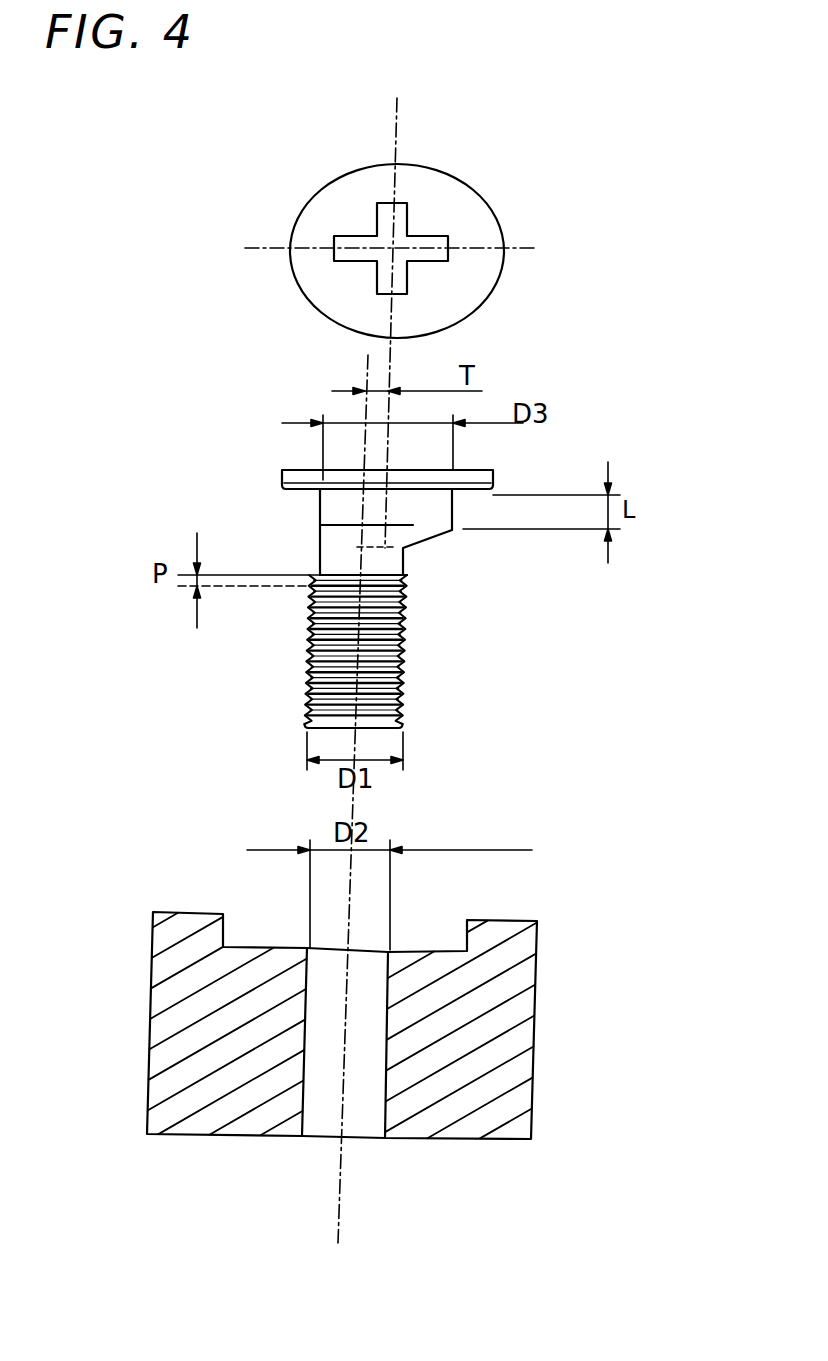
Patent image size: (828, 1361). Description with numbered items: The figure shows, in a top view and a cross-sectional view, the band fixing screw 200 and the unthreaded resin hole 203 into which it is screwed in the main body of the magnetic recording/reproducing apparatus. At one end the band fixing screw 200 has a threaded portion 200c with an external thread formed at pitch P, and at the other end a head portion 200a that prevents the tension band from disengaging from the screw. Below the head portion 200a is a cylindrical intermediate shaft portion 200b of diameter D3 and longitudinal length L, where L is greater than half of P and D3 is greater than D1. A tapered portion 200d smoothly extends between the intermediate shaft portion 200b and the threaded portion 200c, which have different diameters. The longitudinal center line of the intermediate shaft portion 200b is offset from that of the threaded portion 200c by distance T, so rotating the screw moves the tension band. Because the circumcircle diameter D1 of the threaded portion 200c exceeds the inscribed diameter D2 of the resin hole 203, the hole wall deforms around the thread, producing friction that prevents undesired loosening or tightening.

The band fixing screw 200 is at (336, 179).
The head portion 200a is at (297, 477).
The intermediate shaft portion 200b is at (340, 511).
The threaded portion 200c is at (403, 650).
The tapered portion 200d is at (416, 534).
The resin hole 203 is at (363, 1137).